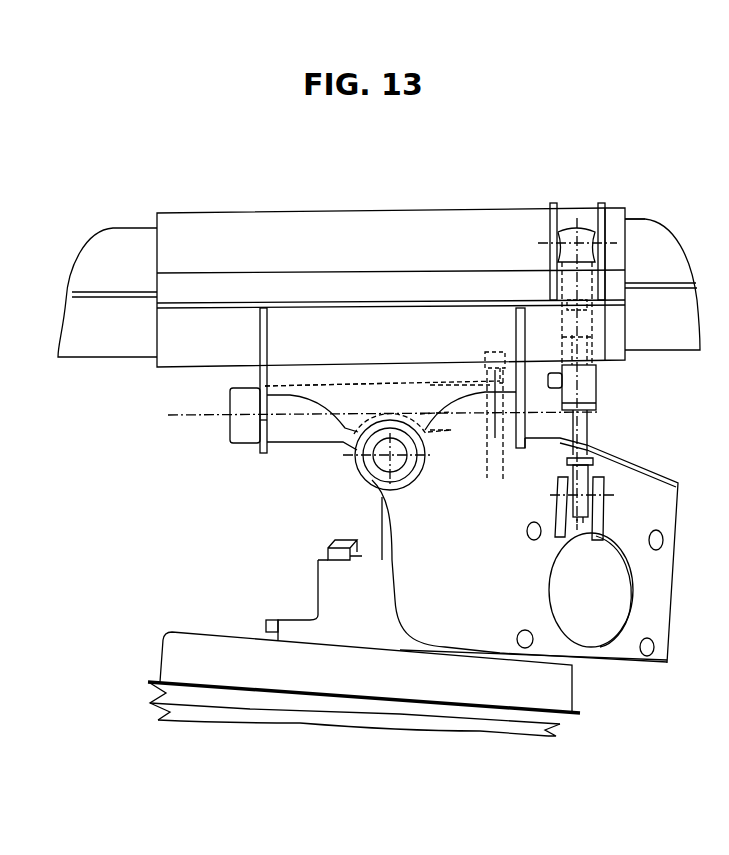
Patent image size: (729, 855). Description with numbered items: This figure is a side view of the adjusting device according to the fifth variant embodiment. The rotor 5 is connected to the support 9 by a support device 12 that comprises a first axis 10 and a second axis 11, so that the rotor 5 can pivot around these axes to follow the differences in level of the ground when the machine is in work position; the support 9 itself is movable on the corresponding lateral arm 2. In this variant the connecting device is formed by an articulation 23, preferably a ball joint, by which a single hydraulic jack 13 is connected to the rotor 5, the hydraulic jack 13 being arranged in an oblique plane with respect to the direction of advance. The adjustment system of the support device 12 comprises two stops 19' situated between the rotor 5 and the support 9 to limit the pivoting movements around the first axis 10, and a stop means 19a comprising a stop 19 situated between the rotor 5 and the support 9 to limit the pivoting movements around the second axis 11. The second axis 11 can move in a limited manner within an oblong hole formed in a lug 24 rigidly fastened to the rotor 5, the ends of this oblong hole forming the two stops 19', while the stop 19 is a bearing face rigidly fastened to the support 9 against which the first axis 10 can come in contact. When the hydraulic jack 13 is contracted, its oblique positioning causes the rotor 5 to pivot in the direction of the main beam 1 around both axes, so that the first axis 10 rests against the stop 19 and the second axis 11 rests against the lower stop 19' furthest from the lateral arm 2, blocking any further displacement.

The main beam 1 is at (677, 309).
The lateral arm 2 is at (110, 277).
The rotor 5 is at (465, 690).
The support 9 is at (518, 230).
The first axis 10 is at (390, 455).
The second axis 11 is at (210, 417).
The support device 12 is at (295, 480).
The hydraulic jack 13 is at (595, 392).
The stop 19 is at (382, 379).
The stop means 19a is at (360, 413).
The stops 19' is at (465, 434).
The articulation 23 is at (587, 512).
The lug 24 is at (490, 377).